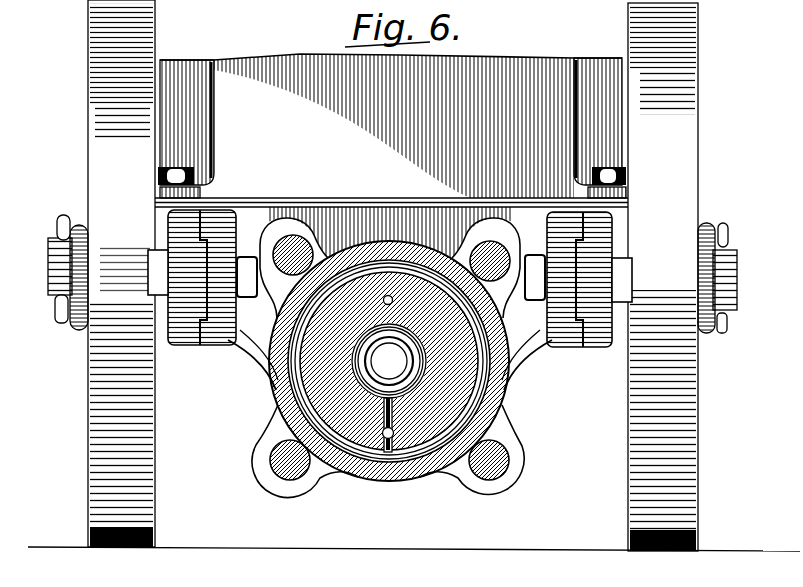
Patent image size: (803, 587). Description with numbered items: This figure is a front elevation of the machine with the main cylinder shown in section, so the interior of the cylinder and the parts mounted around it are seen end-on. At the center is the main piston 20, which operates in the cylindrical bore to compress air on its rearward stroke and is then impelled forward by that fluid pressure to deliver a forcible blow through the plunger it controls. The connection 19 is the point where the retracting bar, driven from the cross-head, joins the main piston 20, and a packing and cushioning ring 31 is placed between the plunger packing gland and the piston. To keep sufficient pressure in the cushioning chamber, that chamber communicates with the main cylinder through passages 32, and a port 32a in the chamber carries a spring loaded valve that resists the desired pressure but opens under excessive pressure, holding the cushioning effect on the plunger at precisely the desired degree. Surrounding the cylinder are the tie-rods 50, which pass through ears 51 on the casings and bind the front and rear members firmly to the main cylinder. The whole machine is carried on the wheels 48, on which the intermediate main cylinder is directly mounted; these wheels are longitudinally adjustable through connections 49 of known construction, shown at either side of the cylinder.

The connection 19 is at (389, 361).
The main piston 20 is at (320, 382).
The packing and cushioning ring 31 is at (400, 450).
The passages 32 is at (385, 437).
The port 32a is at (390, 297).
The wheels 48 is at (145, 443).
The connections 49 is at (207, 342).
The tie-rods 50 is at (307, 243).
The ears 51 is at (288, 226).